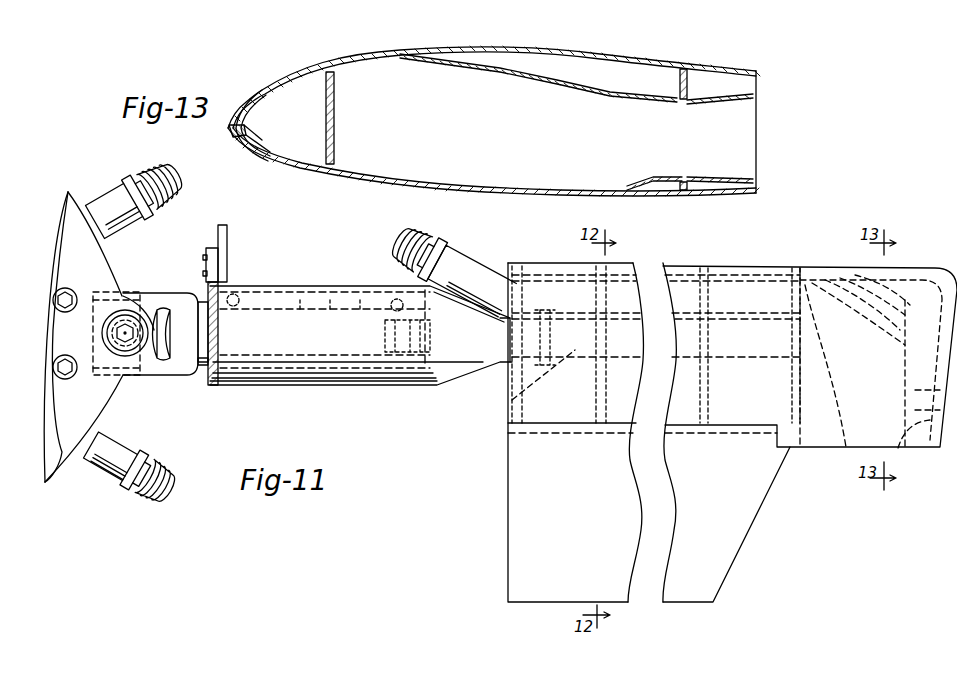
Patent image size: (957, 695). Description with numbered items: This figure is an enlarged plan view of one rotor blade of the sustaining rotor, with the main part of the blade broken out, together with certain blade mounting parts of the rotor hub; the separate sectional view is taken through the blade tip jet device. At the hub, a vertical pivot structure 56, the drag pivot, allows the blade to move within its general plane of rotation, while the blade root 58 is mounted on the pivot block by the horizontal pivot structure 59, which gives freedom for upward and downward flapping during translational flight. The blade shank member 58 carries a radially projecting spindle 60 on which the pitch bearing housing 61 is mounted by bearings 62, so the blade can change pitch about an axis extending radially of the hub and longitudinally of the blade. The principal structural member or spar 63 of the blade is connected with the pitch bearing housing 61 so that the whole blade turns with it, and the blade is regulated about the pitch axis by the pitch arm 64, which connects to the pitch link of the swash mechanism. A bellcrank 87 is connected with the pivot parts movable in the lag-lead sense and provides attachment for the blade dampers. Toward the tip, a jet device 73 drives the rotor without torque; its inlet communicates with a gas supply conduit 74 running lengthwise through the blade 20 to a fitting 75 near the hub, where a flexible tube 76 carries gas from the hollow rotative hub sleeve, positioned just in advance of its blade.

In FIG. 11, the blade section 20 is at (522, 513).
In FIG. 11, the vertical pivot structure 56 is at (160, 292).
In FIG. 11, the blade root 58 is at (203, 372).
In FIG. 11, the horizontal pivot structure 59 is at (112, 392).
In FIG. 11, the spindle 60 is at (308, 384).
In FIG. 11, the pitch bearing housing 61 is at (296, 288).
In FIG. 11, the bearings 62 is at (236, 290).
In FIG. 11, the spar 63 is at (507, 402).
In FIG. 11, the pitch arm 64 is at (217, 236).
In FIG. 13, the jet device 73 is at (556, 80).
In FIG. 11, the jet device 73 is at (905, 450).
In FIG. 13, the gas supply conduit 74 is at (296, 80).
In FIG. 11, the gas supply conduit 74 is at (737, 280).
In FIG. 11, the fitting 75 is at (488, 262).
In FIG. 11, the flexible tube 76 is at (158, 168).
In FIG. 11, the bellcrank 87 is at (126, 348).